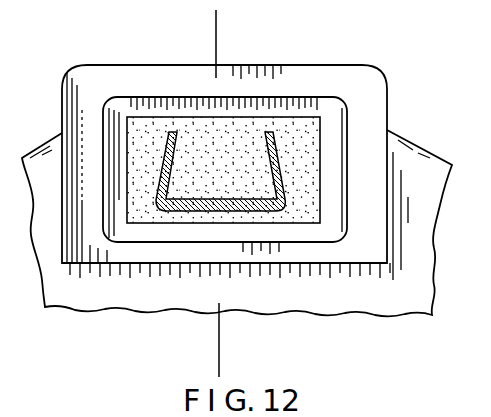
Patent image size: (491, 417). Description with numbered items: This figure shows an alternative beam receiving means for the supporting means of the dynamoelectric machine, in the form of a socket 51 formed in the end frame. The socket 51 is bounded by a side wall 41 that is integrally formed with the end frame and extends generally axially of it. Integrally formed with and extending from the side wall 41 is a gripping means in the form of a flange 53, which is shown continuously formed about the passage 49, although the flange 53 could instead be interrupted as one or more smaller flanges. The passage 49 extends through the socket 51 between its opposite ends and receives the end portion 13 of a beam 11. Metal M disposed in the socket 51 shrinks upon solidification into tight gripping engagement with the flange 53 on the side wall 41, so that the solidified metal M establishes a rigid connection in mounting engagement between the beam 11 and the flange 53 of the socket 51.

The beam 11 is at (175, 157).
The end portion 13 is at (268, 357).
The side wall 41 is at (373, 108).
The passage 49 is at (363, 169).
The socket 51 is at (362, 88).
The flange 53 is at (312, 230).
The metal M is at (296, 133).